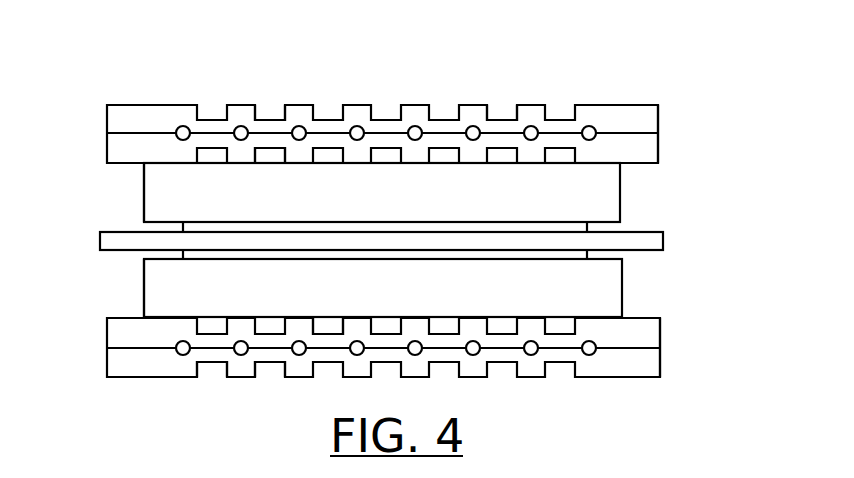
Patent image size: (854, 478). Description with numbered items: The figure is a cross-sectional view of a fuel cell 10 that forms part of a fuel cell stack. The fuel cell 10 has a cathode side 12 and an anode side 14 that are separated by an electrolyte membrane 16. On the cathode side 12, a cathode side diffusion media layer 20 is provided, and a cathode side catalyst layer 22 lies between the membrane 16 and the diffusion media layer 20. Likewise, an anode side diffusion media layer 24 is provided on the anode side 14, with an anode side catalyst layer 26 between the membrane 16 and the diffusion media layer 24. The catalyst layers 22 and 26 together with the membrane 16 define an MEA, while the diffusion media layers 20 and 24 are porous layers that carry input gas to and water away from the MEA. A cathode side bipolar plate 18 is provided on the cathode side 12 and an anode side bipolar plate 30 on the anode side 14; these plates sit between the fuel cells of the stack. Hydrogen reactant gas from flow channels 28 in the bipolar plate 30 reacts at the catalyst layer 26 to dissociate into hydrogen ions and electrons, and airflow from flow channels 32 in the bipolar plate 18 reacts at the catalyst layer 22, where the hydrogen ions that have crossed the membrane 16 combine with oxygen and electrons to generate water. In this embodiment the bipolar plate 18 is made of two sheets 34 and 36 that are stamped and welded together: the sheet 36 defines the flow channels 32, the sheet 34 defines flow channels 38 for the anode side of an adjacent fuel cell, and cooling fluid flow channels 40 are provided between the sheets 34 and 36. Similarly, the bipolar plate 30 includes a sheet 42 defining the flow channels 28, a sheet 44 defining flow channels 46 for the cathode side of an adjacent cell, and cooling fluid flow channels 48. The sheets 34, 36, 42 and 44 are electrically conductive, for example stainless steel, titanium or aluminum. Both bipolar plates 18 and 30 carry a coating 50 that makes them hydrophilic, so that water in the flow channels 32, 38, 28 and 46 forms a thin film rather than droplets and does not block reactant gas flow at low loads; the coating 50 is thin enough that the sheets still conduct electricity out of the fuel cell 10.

The fuel cell 10 is at (608, 84).
The cathode side 12 is at (648, 191).
The anode side 14 is at (650, 287).
The electrolyte membrane 16 is at (664, 243).
The cathode side bipolar plate 18 is at (156, 90).
The cathode side diffusion media layer 20 is at (143, 196).
The cathode side catalyst layer 22 is at (483, 228).
The anode side diffusion media layer 24 is at (145, 289).
The anode side catalyst layer 26 is at (385, 254).
The flow channels 28 is at (327, 316).
The anode side bipolar plate 30 is at (612, 392).
The flow channels 32 is at (268, 162).
The sheet 34 is at (656, 117).
The sheet 36 is at (656, 145).
The flow channels 38 is at (506, 100).
The cooling fluid flow channels 40 is at (292, 142).
The sheet 42 is at (655, 333).
The sheet 44 is at (655, 362).
The flow channels 46 is at (265, 377).
The cooling fluid flow channels 48 is at (298, 342).
The coating 50 is at (255, 110).